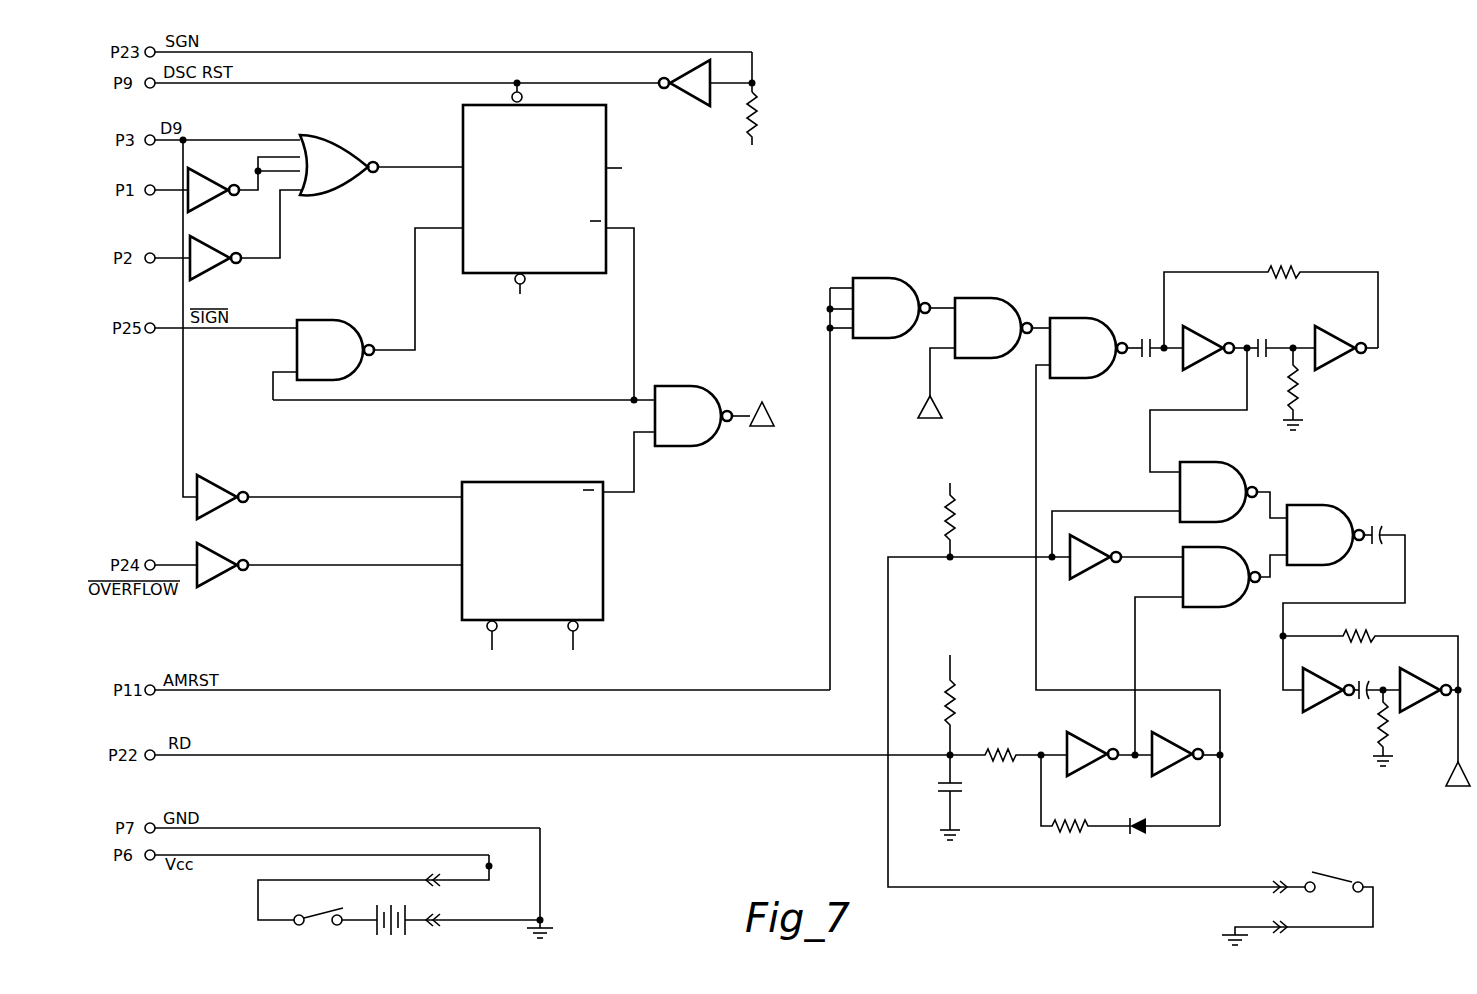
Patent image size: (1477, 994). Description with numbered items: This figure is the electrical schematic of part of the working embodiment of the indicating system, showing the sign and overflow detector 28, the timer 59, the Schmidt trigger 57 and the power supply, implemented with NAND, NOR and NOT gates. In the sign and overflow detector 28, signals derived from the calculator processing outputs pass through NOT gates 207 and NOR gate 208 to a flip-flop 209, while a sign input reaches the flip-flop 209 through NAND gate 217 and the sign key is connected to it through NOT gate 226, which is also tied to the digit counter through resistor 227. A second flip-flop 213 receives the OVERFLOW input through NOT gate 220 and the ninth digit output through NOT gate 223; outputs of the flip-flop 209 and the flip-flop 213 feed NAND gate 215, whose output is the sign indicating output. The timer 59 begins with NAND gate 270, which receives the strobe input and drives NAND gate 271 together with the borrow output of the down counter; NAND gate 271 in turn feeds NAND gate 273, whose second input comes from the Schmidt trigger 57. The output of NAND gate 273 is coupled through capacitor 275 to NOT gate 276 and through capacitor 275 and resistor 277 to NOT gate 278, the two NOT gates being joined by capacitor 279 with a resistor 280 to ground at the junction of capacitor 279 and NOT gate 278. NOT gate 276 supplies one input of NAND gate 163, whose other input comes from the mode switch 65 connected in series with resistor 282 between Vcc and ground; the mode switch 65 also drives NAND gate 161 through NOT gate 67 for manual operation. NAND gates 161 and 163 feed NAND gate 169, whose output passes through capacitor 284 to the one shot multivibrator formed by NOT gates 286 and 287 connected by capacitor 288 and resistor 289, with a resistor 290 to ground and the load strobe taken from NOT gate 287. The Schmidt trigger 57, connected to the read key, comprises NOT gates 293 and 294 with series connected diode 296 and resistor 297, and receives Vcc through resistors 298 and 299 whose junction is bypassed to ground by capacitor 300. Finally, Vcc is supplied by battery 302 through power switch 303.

The NOT gates 207 is at (215, 205).
The NOR gate 208 is at (318, 197).
The flip-flop 209 is at (606, 195).
The NAND gate 217 is at (318, 320).
The sign and overflow detector 28 is at (248, 352).
The NOT gate 223 is at (220, 490).
The NOT gate 220 is at (228, 562).
The second flip-flop 213 is at (580, 458).
The NAND gate 215 is at (720, 360).
The NOT gate 226 is at (706, 104).
The resistor 227 is at (758, 118).
The NAND gate 270 is at (902, 260).
The NAND gate 271 is at (1002, 270).
The NAND gate 273 is at (1108, 300).
The capacitor 275 is at (1146, 338).
The timer 59 is at (1088, 256).
The resistor 277 is at (1302, 248).
The NOT gate 276 is at (1226, 292).
The capacitor 279 is at (1284, 320).
The NOT gate 278 is at (1360, 302).
The resistor 280 is at (1298, 386).
The NAND gate 163 is at (1230, 440).
The NAND gate 161 is at (1192, 548).
The NAND gate 169 is at (1342, 490).
The capacitor 284 is at (1375, 527).
The NOT gate 67 is at (1093, 570).
The resistor 282 is at (952, 525).
The resistor 298 is at (960, 692).
The resistor 299 is at (1022, 728).
The NOT gate 293 is at (1115, 718).
The NOT gate 294 is at (1208, 718).
The resistor 297 is at (1060, 824).
The diode 296 is at (1138, 822).
The bypass capacitor 300 is at (945, 787).
The Schmidt trigger 57 is at (1043, 845).
The resistor 289 is at (1378, 636).
The NOT gate 286 is at (1356, 657).
The capacitor 288 is at (1358, 702).
The NOT gate 287 is at (1446, 657).
The resistor 290 is at (1390, 728).
The mode switch 65 is at (1352, 843).
The power switch 303 is at (296, 925).
The battery 302 is at (405, 912).